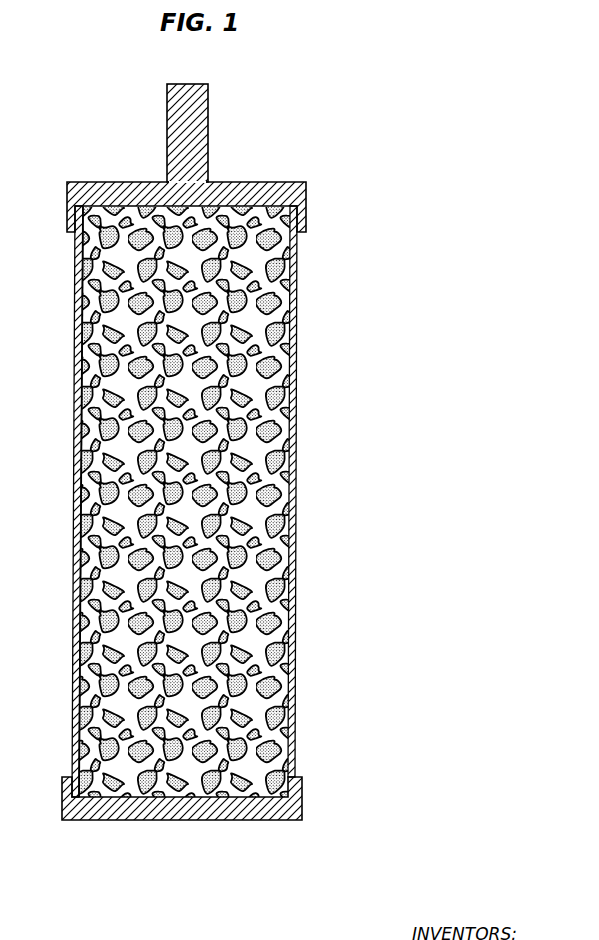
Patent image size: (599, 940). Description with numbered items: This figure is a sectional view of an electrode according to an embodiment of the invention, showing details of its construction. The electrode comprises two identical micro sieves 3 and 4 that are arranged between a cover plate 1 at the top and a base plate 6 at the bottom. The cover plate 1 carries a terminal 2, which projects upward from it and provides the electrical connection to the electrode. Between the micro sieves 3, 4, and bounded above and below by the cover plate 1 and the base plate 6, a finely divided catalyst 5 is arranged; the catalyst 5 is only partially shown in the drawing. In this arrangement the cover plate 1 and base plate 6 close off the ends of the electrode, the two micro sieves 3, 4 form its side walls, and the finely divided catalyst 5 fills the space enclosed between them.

The cover plate 1 is at (290, 197).
The terminal 2 is at (176, 118).
The micro sieve 3 is at (298, 399).
The micro sieve 4 is at (77, 425).
The finely divided catalyst 5 is at (296, 281).
The base plate 6 is at (82, 805).